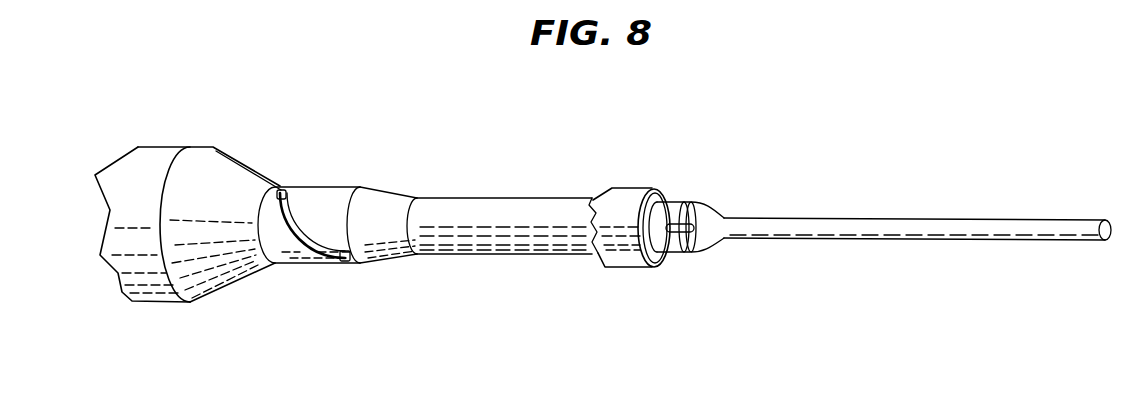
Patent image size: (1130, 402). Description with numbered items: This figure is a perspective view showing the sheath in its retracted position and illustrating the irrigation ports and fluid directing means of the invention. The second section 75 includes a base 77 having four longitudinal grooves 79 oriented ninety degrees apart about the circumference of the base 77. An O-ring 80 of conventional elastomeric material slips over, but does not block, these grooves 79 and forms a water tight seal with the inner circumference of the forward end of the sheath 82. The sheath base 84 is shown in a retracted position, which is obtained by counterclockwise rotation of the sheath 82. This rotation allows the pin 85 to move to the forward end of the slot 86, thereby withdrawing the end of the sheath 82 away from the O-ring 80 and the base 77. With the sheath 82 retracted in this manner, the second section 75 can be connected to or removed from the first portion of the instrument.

The second section 75 is at (843, 235).
The base 77 is at (670, 245).
The longitudinal grooves 79 is at (705, 232).
The O-ring 80 is at (688, 228).
The sheath 82 is at (460, 207).
The sheath base 84 is at (322, 195).
The pin 85 is at (345, 263).
The slot 86 is at (300, 262).